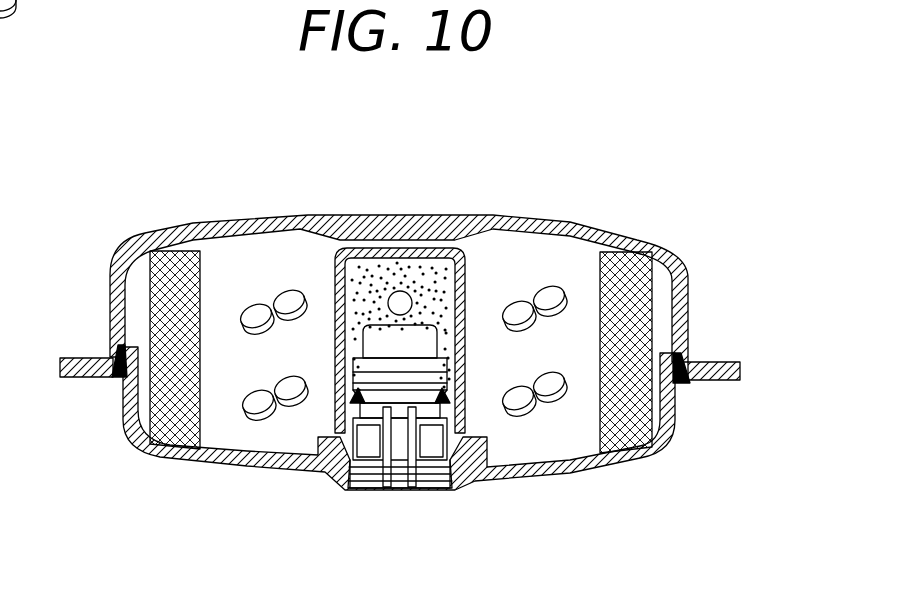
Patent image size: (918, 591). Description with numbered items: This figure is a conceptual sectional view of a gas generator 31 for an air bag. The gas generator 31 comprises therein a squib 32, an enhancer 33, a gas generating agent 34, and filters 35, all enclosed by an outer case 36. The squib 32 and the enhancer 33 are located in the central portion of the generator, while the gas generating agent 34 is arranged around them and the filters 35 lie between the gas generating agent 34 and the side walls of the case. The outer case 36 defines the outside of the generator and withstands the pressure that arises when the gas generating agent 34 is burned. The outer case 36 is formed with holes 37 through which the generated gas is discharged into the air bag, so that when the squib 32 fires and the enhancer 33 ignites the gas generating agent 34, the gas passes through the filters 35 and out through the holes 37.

The gas generator 31 is at (512, 153).
The squib 32 is at (351, 463).
The enhancer 33 is at (430, 275).
The gas generating agent 34 is at (288, 287).
The filters 35 is at (157, 372).
The outer case 36 is at (562, 230).
The holes 37 is at (110, 301).